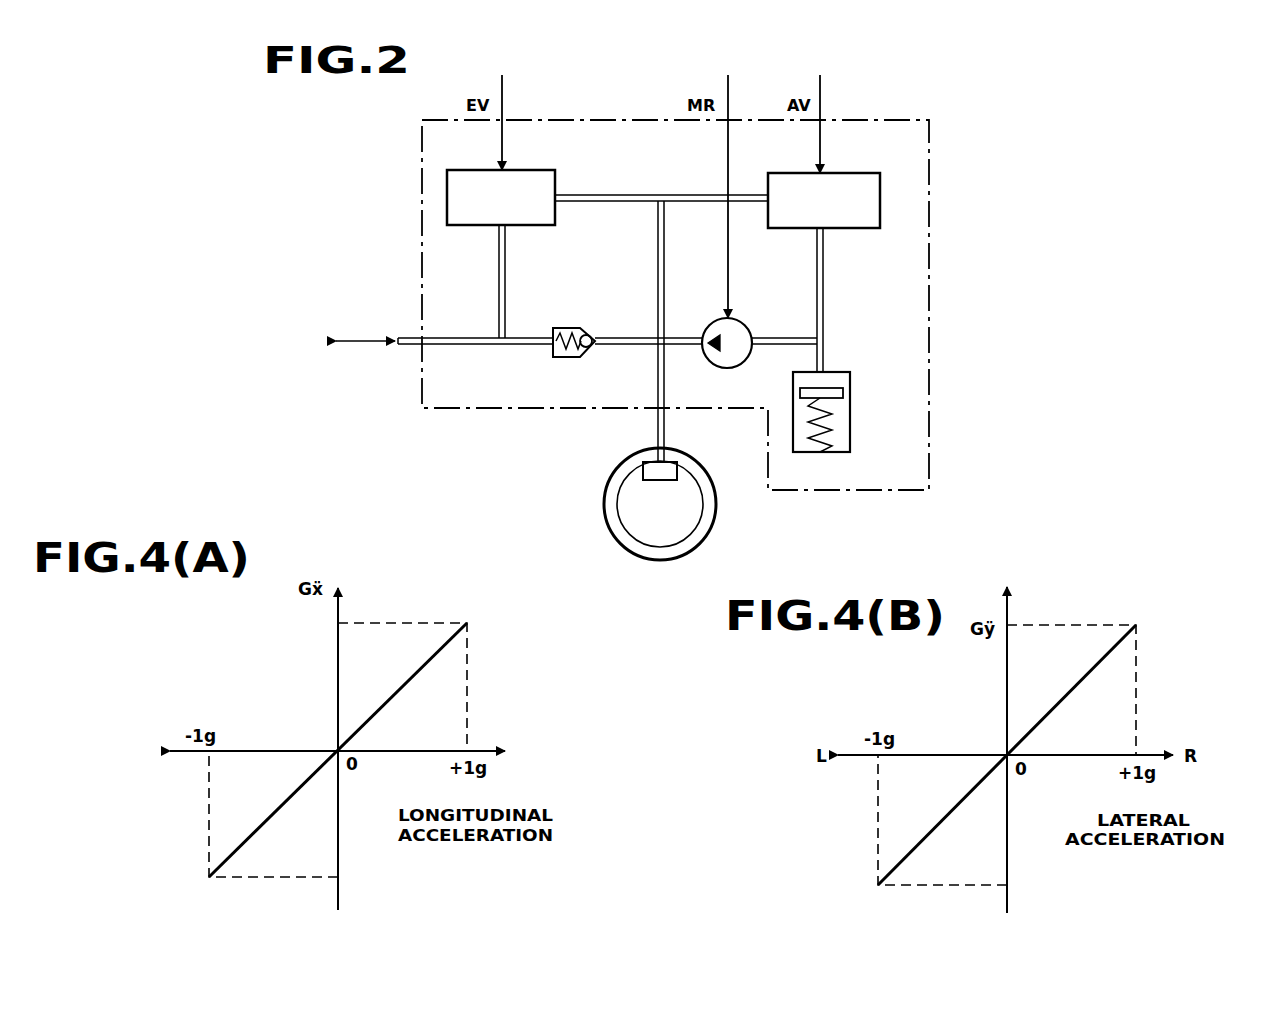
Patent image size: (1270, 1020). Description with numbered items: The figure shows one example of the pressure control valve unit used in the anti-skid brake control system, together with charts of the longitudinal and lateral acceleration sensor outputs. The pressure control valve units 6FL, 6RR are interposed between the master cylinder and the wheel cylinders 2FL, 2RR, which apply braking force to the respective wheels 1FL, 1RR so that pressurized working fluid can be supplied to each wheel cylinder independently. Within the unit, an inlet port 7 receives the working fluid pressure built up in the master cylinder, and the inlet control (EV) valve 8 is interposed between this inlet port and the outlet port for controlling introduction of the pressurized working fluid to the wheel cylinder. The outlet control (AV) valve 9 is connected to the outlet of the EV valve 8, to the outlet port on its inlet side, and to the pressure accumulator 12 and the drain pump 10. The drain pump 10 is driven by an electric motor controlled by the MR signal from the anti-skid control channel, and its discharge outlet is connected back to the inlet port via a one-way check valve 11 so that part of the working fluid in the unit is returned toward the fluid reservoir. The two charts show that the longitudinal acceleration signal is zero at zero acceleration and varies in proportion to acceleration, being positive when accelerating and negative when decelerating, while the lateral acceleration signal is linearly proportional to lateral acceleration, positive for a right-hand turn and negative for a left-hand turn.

The front-left wheel 1FL is at (577, 504).
The rear-right wheel 1RR is at (604, 514).
The front-left wheel cylinder 2FL is at (753, 502).
The rear-right wheel cylinder 2RR is at (672, 480).
The front-left pressure control valve unit 6FL is at (673, 305).
The pressure control valve unit 6RR is at (497, 410).
The fluid port / master cylinder line 7 is at (408, 336).
The inlet control (EV) valve 8 is at (536, 170).
The outlet control (AV) valve 9 is at (868, 173).
The drain pump 10 is at (748, 329).
The one-way check valve 11 is at (569, 328).
The pressure accumulator 12 is at (851, 400).